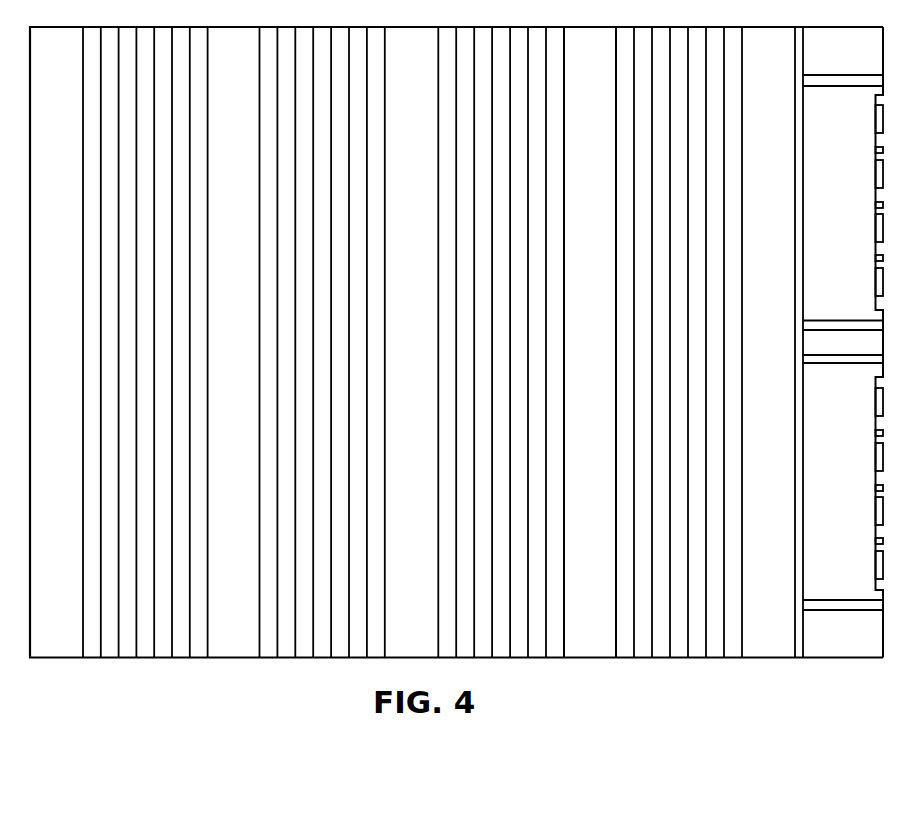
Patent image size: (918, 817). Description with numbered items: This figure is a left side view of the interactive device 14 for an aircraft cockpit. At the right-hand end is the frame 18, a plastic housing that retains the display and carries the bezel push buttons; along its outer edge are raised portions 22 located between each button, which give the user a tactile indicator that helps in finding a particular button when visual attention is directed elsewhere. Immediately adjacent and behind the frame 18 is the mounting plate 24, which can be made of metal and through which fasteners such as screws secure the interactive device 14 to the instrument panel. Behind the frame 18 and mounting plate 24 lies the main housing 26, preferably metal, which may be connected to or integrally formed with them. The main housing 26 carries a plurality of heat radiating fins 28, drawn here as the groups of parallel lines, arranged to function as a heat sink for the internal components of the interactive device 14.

The interactive device 14 is at (177, 677).
The frame 18 is at (848, 637).
The raised portions 22 is at (875, 432).
The mounting plate 24 is at (799, 649).
The main housing 26 is at (579, 630).
The heat radiating fins 28 is at (626, 649).